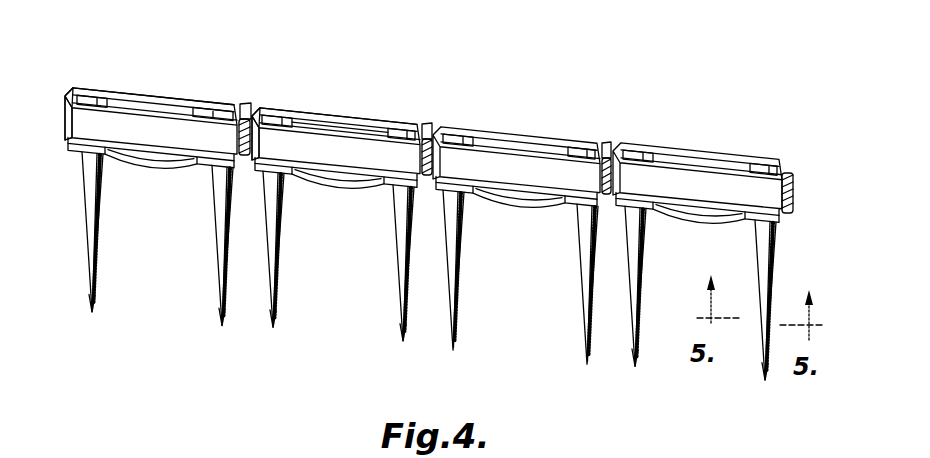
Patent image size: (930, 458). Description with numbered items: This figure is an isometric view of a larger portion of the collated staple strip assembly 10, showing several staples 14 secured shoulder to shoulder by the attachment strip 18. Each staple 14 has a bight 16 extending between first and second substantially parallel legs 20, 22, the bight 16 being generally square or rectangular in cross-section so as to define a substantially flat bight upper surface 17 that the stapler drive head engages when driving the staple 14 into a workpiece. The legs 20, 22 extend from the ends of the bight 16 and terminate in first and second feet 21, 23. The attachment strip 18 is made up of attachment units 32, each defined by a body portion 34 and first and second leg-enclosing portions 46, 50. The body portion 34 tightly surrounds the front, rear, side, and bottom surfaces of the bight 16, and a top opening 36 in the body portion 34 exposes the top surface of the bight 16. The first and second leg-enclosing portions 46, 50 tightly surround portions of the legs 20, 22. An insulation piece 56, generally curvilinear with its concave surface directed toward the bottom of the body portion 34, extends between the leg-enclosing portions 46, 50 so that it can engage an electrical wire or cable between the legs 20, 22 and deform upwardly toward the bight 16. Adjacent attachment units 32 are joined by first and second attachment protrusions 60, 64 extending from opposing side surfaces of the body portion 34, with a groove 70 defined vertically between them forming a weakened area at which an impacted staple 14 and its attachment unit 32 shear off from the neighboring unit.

The collated staple strip assembly 10 is at (534, 101).
The staple 14 is at (106, 313).
The bight 16 is at (193, 110).
The bight upper surface 17 is at (374, 127).
The attachment strip 18 is at (794, 159).
The first leg 20 is at (84, 278).
The first foot 21 is at (93, 300).
The second leg 22 is at (217, 279).
The second foot 23 is at (222, 316).
The attachment unit 32 is at (130, 86).
The body portion 34 is at (148, 96).
The top opening 36 is at (166, 94).
The first leg-enclosing portion 46 is at (92, 147).
The second leg-enclosing portion 50 is at (222, 163).
The insulation piece 56 is at (157, 158).
The first attachment protrusion 60 is at (73, 96).
The second attachment protrusion 64 is at (245, 116).
The groove 70 is at (247, 163).